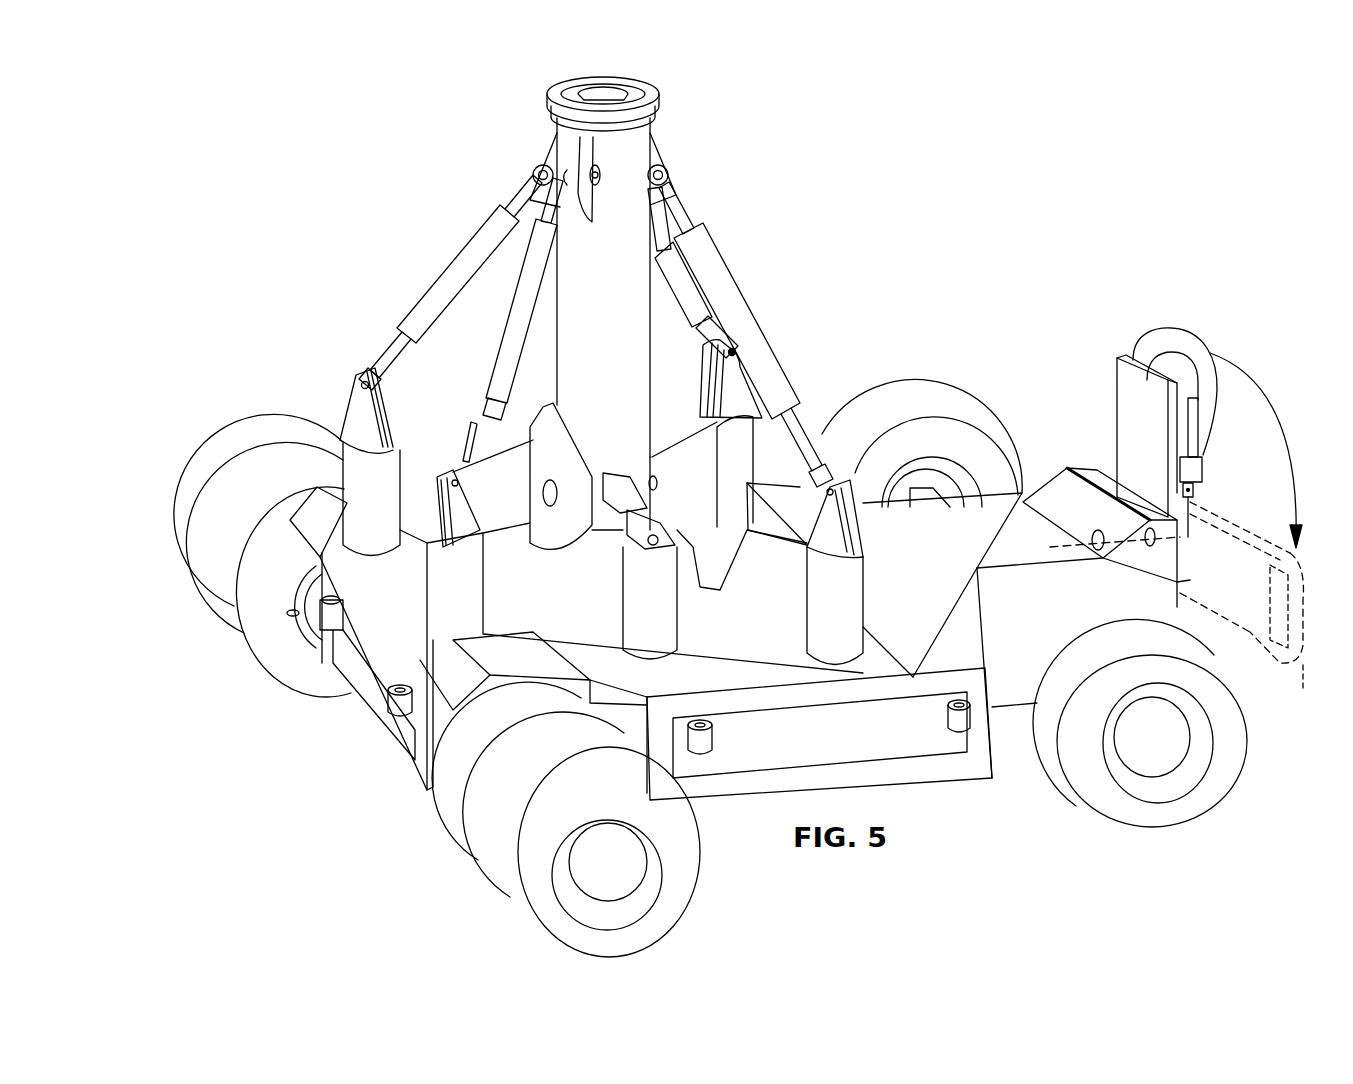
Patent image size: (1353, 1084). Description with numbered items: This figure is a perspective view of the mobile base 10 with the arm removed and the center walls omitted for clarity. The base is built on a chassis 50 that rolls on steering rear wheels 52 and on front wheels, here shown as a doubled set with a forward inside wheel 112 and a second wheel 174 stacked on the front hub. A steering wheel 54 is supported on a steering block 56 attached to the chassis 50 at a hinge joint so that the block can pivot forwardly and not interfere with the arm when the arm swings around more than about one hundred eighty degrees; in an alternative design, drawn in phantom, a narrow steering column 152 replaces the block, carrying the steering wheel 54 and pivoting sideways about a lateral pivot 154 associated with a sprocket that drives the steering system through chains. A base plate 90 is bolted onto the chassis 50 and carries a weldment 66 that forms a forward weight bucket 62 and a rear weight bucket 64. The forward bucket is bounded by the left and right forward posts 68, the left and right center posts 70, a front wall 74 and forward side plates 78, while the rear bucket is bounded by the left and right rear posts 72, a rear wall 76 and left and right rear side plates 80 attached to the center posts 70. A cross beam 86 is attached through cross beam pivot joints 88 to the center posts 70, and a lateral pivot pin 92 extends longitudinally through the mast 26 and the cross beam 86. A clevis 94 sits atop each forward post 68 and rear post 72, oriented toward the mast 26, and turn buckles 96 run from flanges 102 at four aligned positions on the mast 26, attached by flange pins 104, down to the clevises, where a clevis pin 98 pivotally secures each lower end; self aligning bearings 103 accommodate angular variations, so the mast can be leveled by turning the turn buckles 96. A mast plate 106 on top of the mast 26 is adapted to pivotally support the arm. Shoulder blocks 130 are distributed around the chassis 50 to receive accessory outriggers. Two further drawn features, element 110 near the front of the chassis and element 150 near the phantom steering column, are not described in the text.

The mobile base 10 is at (1037, 347).
The mast 26 is at (602, 273).
The chassis 50 is at (945, 587).
The rear wheels 52 is at (953, 403).
The steering wheel 54 is at (1167, 337).
The steering block 56 is at (1190, 488).
The forward weight bucket 62 is at (407, 466).
The rear weight bucket 64 is at (677, 416).
The weldment 66 is at (730, 610).
The forward posts 68 is at (398, 463).
The center posts 70 is at (562, 527).
The rear posts 72 is at (727, 457).
The front wall 74 is at (350, 597).
The rear wall 76 is at (773, 523).
The forward side plates 78 is at (496, 544).
The rear side plates 80 is at (739, 544).
The cross beam 86 is at (612, 492).
The cross beam pivot joints 88 is at (655, 550).
The base plate 90 is at (880, 665).
The lateral pivot pin 92 is at (553, 483).
The clevis 94 is at (360, 408).
The turn buckles 96 is at (455, 277).
The clevis pin 98 is at (364, 382).
The flanges 102 is at (555, 140).
The self aligning bearings 103 is at (535, 180).
The flange pins 104 is at (533, 175).
The mast plate 106 is at (657, 93).
The fender block 110 is at (533, 671).
The forward inside wheel 112 is at (453, 793).
The shoulder blocks 130 is at (293, 653).
The extension 150 is at (1167, 603).
The steering column 152 is at (1213, 582).
The lateral pivot 154 is at (1097, 532).
The second wheel 174 is at (530, 827).